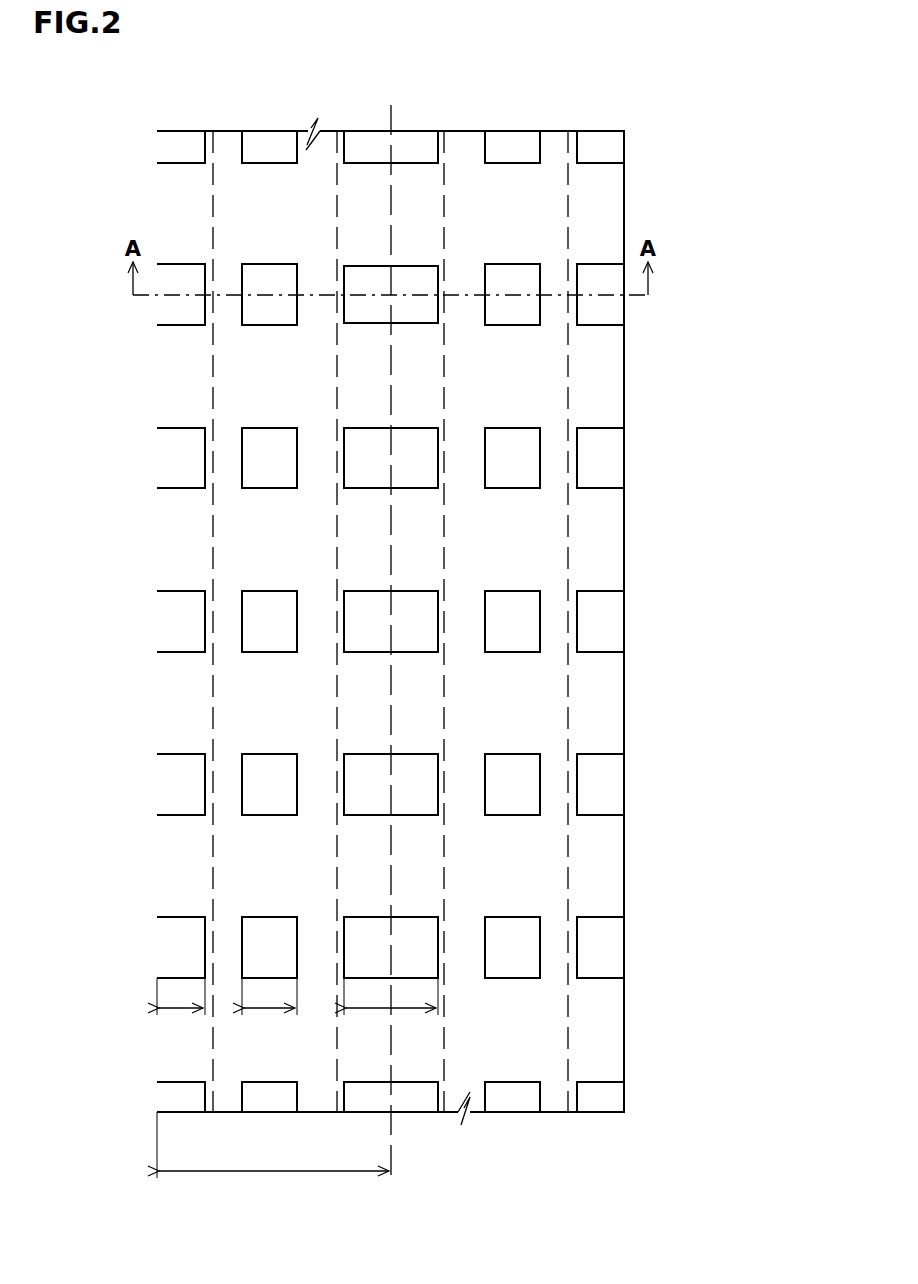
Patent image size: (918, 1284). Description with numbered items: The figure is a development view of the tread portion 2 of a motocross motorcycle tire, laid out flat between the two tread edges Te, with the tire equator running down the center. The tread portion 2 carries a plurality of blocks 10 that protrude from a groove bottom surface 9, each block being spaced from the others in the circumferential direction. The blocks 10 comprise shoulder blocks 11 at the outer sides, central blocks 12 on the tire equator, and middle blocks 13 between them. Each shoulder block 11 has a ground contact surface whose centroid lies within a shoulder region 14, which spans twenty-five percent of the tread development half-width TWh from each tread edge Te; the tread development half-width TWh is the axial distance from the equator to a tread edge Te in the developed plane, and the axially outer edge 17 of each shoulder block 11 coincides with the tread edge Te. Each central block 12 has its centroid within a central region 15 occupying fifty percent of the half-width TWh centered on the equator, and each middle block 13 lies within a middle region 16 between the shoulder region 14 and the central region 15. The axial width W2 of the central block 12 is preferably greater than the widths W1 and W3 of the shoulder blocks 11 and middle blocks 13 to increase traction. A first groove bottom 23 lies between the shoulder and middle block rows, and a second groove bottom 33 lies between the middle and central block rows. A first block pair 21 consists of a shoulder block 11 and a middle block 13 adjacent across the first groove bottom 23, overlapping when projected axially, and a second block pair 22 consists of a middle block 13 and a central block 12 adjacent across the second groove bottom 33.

The tread portion 2 is at (303, 124).
The groove bottom surface 9 is at (232, 185).
The blocks 10 is at (60, 310).
The shoulder block 11 is at (178, 308).
The central block 12 is at (375, 310).
The middle block 13 is at (270, 310).
The shoulder region 14 is at (185, 200).
The central region 15 is at (363, 200).
The middle region 16 is at (273, 200).
The axially outer edge 17 is at (157, 153).
The first block pair 21 is at (710, 483).
The second block pair 22 is at (710, 695).
The first groove bottom 23 is at (552, 452).
The second groove bottom 33 is at (467, 622).
The tread edge Te is at (157, 147).
The axial width of shoulder block ground contact surface W1 is at (182, 1010).
The axial width of central block ground contact surface W2 is at (407, 1010).
The axial width of middle block ground contact surface W3 is at (268, 1010).
The tread development half-width TWh is at (275, 1190).